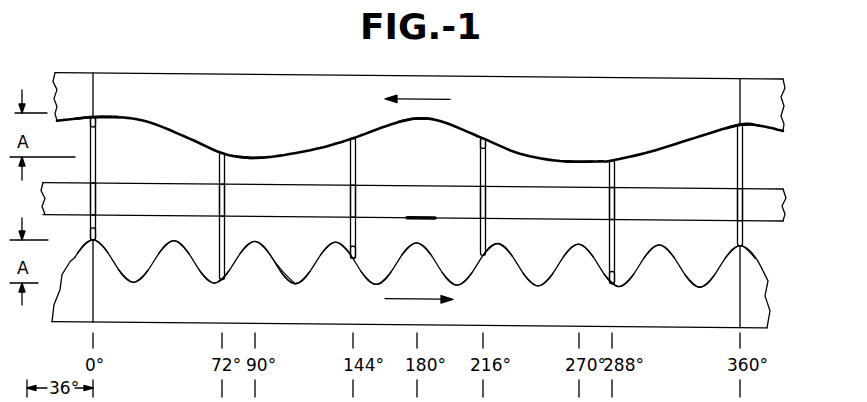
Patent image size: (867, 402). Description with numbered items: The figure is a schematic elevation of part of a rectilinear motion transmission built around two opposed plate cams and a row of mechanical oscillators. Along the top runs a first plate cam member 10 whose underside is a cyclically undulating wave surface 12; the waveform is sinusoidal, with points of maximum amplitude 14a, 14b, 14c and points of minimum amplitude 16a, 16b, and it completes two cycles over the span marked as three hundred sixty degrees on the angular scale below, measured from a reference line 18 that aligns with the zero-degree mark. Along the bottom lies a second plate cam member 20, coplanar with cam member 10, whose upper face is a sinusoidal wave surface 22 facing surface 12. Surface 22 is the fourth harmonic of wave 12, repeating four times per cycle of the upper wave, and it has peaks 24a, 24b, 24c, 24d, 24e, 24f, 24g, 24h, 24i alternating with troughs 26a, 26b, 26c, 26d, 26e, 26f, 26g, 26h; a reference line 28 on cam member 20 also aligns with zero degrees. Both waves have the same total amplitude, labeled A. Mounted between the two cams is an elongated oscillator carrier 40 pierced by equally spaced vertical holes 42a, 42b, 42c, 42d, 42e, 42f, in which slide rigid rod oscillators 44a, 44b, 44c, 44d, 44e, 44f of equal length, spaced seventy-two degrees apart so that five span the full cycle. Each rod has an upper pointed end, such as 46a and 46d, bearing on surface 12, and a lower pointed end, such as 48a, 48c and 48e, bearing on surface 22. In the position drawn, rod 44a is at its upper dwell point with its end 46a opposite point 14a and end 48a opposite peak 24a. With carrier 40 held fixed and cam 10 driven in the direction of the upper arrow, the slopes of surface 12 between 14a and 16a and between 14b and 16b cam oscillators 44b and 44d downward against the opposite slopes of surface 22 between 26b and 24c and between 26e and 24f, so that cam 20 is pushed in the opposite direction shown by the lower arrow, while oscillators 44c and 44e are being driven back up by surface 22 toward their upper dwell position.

The first plate cam member 10 is at (344, 111).
The undulating wave surface 12 is at (376, 124).
The point of maximum amplitude 14a is at (95, 117).
The point of maximum amplitude 14b is at (413, 116).
The point of maximum amplitude 14c is at (740, 119).
The point of minimum amplitude 16a is at (254, 156).
The point of minimum amplitude 16b is at (573, 156).
The reference line 18 is at (97, 90).
The second plate cam member 20 is at (360, 300).
The sinusoidal wave surface 22 is at (277, 257).
The point of peak amplitude 24a is at (97, 242).
The point of peak amplitude 24b is at (174, 241).
The point of peak amplitude 24c is at (256, 235).
The point of peak amplitude 24d is at (338, 234).
The point of peak amplitude 24e is at (418, 240).
The point of peak amplitude 24f is at (498, 240).
The point of peak amplitude 24g is at (578, 241).
The point of peak amplitude 24h is at (660, 240).
The point of peak amplitude 24i is at (743, 240).
The point of minimum amplitude 26a is at (134, 283).
The point of minimum amplitude 26b is at (230, 285).
The point of minimum amplitude 26c is at (293, 283).
The point of minimum amplitude 26d is at (378, 283).
The point of minimum amplitude 26e is at (458, 283).
The point of minimum amplitude 26f is at (539, 282).
The point of minimum amplitude 26g is at (620, 282).
The point of minimum amplitude 26h is at (700, 283).
The reference line 28 is at (96, 302).
The oscillator carrier 40 is at (413, 202).
The hole 42a is at (96, 203).
The hole 42b is at (226, 202).
The hole 42c is at (357, 200).
The hole 42d is at (488, 200).
The hole 42e is at (617, 201).
The hole 42f is at (746, 200).
The oscillator 44a is at (96, 165).
The oscillator 44b is at (225, 159).
The oscillator 44c is at (357, 161).
The oscillator 44d is at (488, 164).
The oscillator 44e is at (617, 163).
The oscillator 44f is at (746, 164).
The upper pointed end 46a is at (96, 124).
The upper pointed end 46d is at (482, 135).
The lower pointed end 48a is at (90, 240).
The lower pointed end 48c is at (358, 250).
The lower pointed end 48e is at (615, 276).